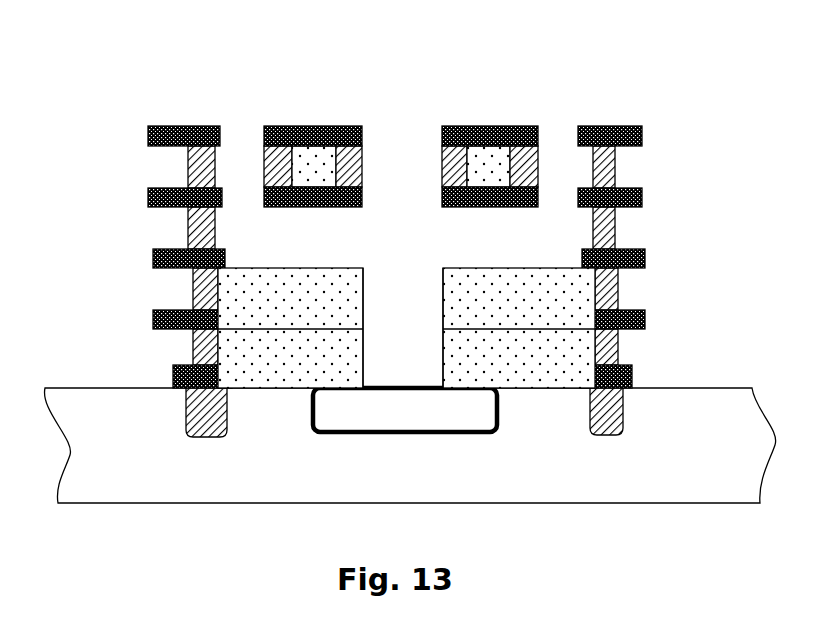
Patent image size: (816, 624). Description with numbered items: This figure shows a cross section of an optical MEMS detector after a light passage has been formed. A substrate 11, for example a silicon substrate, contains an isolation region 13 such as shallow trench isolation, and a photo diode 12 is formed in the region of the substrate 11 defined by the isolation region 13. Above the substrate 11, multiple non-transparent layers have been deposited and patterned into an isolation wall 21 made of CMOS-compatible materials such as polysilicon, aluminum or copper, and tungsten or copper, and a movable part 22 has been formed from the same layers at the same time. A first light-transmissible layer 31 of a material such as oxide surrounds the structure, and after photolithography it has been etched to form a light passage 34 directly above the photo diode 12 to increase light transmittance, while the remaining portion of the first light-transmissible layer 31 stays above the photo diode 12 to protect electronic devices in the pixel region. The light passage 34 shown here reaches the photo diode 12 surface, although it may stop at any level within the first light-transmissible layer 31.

The substrate 11 is at (146, 473).
The photo diode 12 is at (423, 426).
The isolation region 13 is at (597, 408).
The isolation wall 21 is at (673, 113).
The movable part 22 is at (535, 102).
The first light-transmissible layer 31 is at (270, 291).
The light passage 34 is at (418, 324).